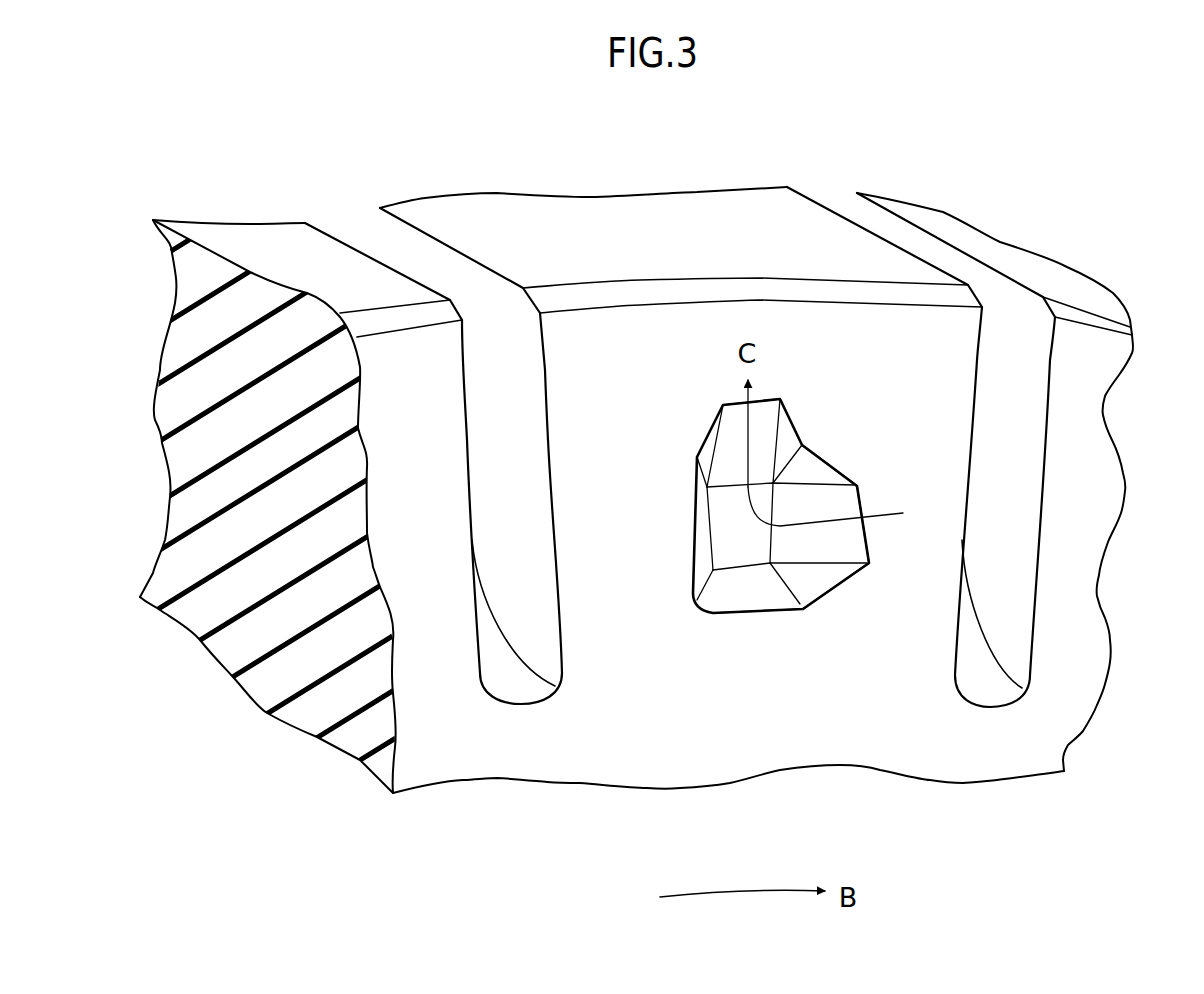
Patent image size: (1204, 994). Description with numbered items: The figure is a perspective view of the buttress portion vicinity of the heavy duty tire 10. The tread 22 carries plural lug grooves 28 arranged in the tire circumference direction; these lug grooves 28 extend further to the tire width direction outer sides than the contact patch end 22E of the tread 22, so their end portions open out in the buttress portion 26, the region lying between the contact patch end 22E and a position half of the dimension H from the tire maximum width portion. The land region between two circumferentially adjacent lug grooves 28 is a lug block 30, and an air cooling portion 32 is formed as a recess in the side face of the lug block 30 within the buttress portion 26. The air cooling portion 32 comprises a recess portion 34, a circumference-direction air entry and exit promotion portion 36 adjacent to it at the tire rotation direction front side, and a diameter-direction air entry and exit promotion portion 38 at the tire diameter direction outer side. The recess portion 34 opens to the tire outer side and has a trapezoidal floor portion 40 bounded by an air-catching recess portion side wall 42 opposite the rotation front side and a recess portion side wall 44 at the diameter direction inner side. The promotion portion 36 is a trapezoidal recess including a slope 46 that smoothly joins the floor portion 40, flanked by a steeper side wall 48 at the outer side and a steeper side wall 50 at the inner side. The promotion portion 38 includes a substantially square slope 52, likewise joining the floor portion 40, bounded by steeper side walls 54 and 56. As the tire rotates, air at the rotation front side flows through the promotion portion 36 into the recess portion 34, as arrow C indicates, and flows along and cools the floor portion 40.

The heavy duty tire 10 is at (525, 145).
The tread 22 is at (637, 227).
The contact patch end 22E is at (720, 277).
The buttress portion 26 is at (553, 743).
The lug grooves 28 is at (418, 257).
The lug block 30 is at (268, 247).
The air cooling portion 32 is at (657, 477).
The recess portion 34 is at (722, 618).
The circumference-direction air entry and exit promotion portion 36 is at (870, 538).
The diameter-direction air entry and exit promotion portion 38 is at (762, 396).
The floor portion 40 is at (732, 532).
The recess portion side wall 42 is at (703, 552).
The recess portion side wall 44 is at (770, 590).
The slope 46 is at (835, 507).
The side wall 48 is at (813, 470).
The side wall 50 is at (810, 583).
The slope 52 is at (737, 420).
The side wall 54 is at (787, 447).
The side wall 56 is at (710, 450).